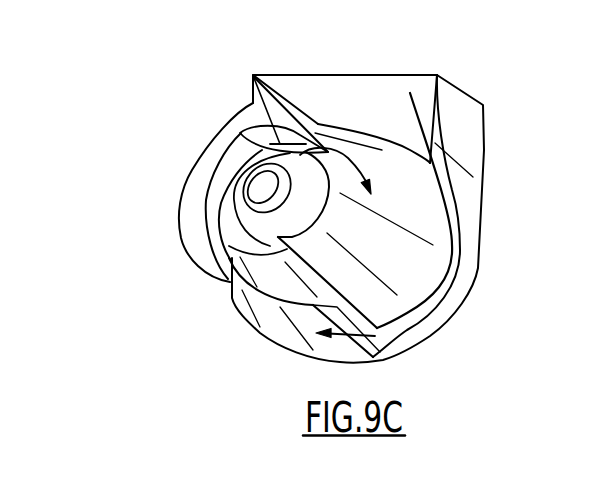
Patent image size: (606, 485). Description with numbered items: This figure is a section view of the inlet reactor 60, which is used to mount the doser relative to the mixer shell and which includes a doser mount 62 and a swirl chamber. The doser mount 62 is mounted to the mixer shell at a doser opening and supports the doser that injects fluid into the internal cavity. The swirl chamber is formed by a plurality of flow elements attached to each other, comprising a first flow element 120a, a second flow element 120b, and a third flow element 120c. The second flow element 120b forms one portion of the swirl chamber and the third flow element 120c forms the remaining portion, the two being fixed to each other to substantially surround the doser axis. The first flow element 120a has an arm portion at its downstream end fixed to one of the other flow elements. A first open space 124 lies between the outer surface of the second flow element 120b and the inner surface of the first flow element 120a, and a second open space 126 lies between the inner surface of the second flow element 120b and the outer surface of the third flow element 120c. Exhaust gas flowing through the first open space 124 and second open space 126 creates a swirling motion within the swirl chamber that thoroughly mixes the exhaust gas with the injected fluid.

The inlet reactor 60 is at (135, 170).
The doser mount 62 is at (220, 143).
The first open space 124 is at (420, 103).
The second open space 126 is at (255, 102).
The first flow element 120a is at (485, 153).
The second flow element 120b is at (397, 250).
The third flow element 120c is at (256, 318).